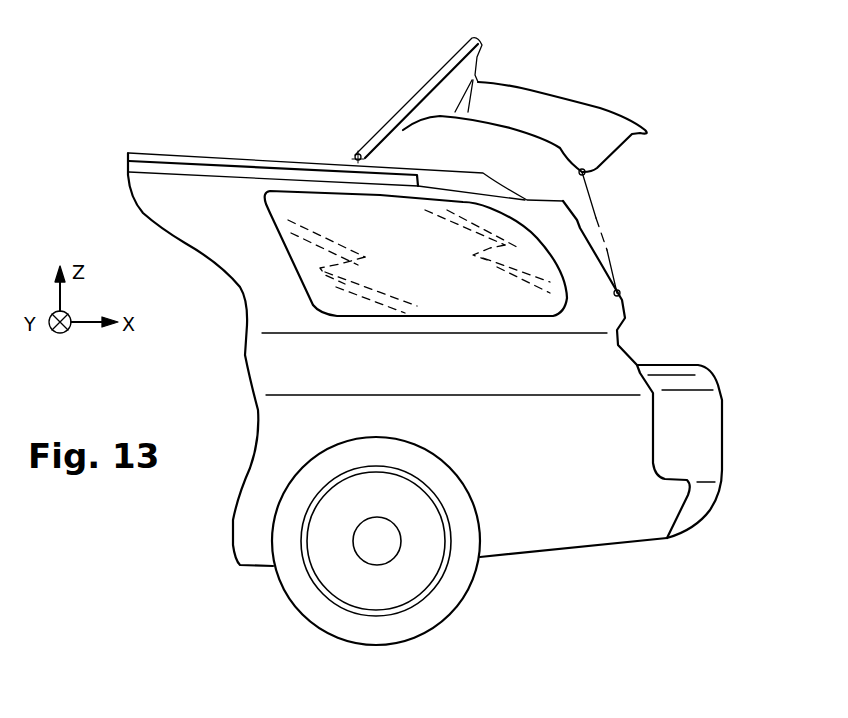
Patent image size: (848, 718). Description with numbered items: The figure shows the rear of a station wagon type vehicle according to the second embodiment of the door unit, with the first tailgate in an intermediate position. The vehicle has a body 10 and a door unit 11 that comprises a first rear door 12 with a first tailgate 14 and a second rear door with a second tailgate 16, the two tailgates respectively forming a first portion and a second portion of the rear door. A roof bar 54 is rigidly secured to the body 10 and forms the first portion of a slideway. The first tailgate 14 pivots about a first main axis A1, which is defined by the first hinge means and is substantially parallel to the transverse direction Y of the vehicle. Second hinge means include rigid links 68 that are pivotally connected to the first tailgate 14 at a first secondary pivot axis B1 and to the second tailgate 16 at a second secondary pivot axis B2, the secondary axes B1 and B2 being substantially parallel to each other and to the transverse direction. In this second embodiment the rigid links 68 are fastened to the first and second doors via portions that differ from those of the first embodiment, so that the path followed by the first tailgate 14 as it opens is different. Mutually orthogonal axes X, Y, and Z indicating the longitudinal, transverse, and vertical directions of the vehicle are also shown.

The body 10 is at (200, 212).
The door unit 11 is at (738, 129).
The first rear door 12 is at (632, 78).
The first tailgate 14 is at (550, 108).
The second tailgate 16 is at (693, 420).
The roof bar 54 is at (210, 150).
The rigid link 68 is at (605, 255).
The first main axis A1 is at (356, 153).
The first secondary pivot axis B1 is at (584, 174).
The second secondary pivot axis B2 is at (620, 294).